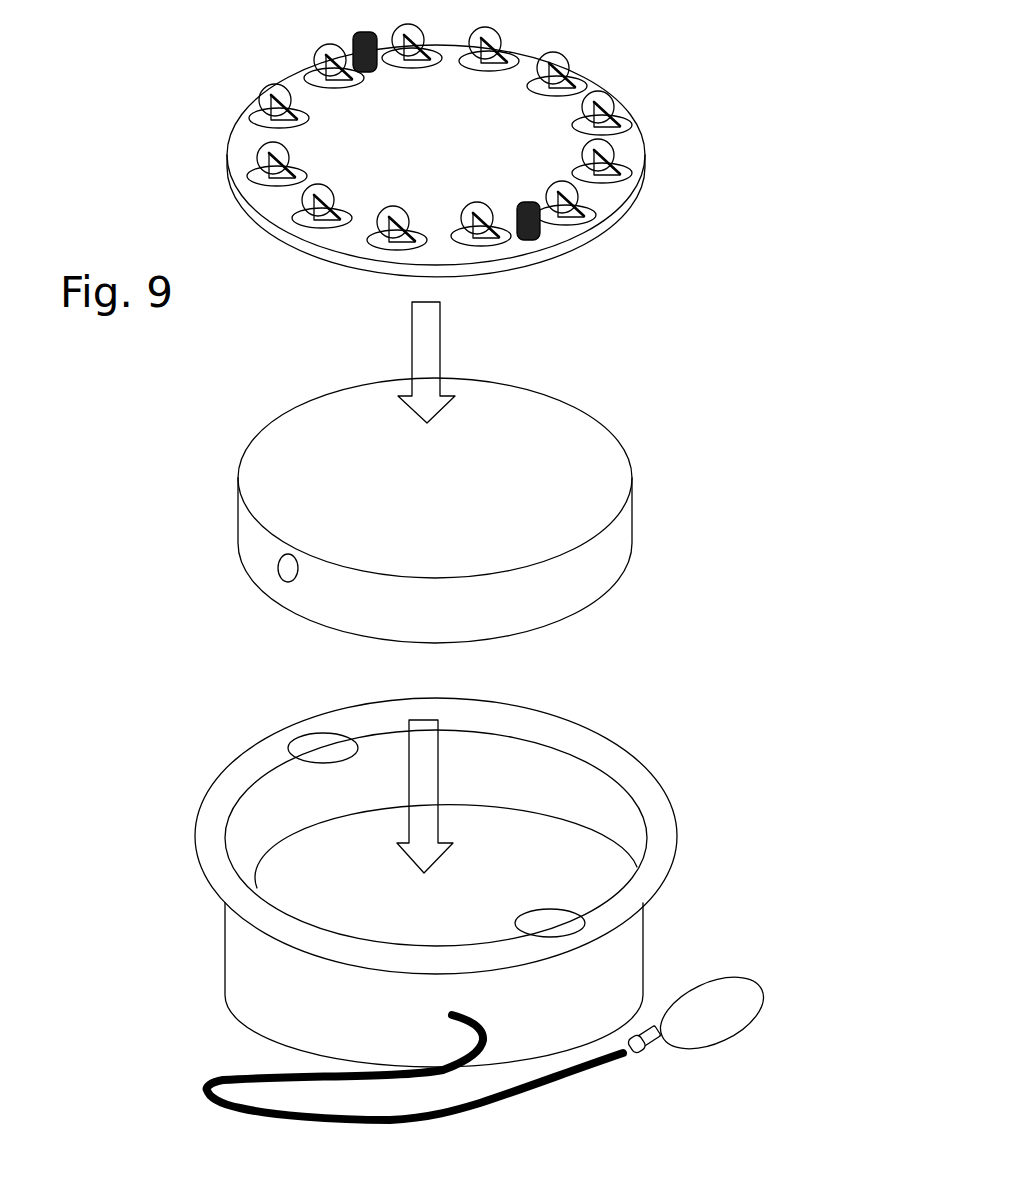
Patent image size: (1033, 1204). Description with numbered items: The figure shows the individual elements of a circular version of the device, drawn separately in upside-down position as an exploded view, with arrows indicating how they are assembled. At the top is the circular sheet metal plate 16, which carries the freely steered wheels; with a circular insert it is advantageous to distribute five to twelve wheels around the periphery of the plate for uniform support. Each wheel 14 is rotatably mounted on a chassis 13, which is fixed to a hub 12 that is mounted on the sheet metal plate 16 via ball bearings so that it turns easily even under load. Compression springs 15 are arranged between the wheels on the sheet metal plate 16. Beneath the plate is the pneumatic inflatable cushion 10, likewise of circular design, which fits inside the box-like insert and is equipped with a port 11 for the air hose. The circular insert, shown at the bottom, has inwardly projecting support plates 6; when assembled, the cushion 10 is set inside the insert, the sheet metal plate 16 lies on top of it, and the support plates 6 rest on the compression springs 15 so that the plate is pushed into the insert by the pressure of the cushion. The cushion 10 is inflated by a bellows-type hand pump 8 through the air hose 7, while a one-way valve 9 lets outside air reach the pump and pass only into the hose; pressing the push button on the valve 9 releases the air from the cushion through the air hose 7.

The support plates 6 is at (322, 747).
The air hose 7 is at (430, 1120).
The hand pump 8 is at (718, 1005).
The valve 9 is at (650, 1047).
The pneumatic inflatable cushion 10 is at (415, 493).
The port 11 is at (285, 568).
The hubs 12 is at (262, 118).
The chassis 13 is at (280, 102).
The wheels 14 is at (572, 193).
The compression springs 15 is at (540, 240).
The sheet metal plate 16 is at (457, 143).